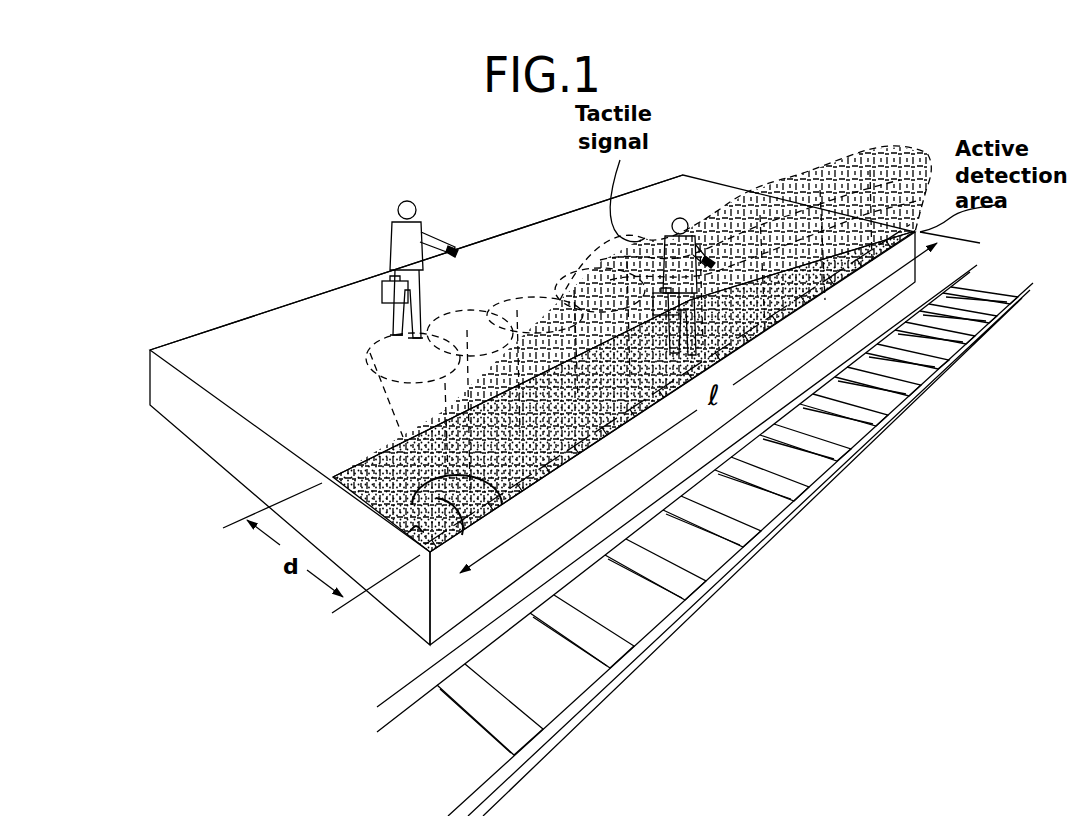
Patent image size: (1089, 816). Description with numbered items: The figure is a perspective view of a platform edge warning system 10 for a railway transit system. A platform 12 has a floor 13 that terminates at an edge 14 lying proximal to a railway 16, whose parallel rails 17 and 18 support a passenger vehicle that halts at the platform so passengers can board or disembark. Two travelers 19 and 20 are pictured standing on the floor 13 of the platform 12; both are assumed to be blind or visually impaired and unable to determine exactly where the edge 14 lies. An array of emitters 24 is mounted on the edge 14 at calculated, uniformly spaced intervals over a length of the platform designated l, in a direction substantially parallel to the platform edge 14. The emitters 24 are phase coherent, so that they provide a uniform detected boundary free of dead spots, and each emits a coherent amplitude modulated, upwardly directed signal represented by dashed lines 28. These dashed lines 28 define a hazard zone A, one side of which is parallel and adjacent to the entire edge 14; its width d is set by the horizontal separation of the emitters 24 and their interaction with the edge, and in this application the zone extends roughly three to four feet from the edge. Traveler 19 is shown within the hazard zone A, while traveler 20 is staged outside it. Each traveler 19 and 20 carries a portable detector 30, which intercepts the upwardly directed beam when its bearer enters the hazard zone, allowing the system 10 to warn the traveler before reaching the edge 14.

The platform edge warning system 10 is at (460, 138).
The platform 12 is at (224, 432).
The floor 13 is at (230, 340).
The edge 14 is at (450, 600).
The railway 16 is at (729, 529).
The rail 17 is at (978, 265).
The rail 18 is at (1022, 297).
The traveler 19 is at (683, 218).
The traveler 20 is at (420, 240).
The emitters 24 is at (448, 492).
The dashed lines 28 is at (392, 403).
The portable detector 30 is at (458, 257).